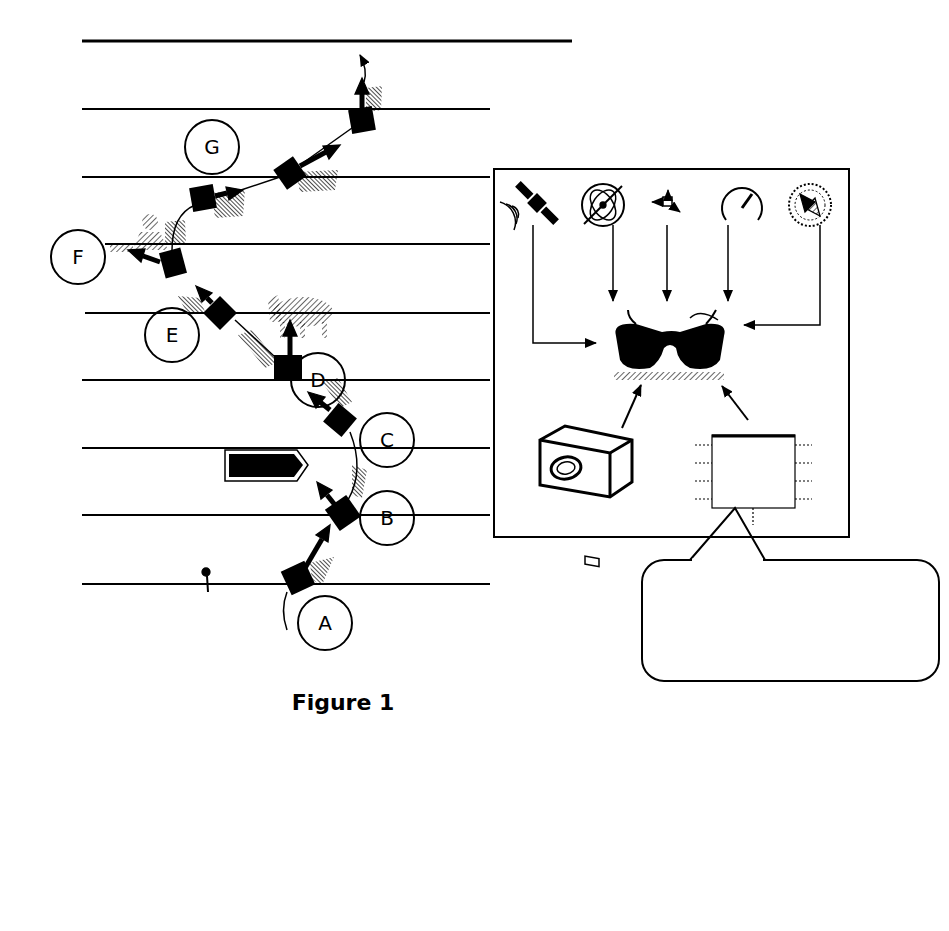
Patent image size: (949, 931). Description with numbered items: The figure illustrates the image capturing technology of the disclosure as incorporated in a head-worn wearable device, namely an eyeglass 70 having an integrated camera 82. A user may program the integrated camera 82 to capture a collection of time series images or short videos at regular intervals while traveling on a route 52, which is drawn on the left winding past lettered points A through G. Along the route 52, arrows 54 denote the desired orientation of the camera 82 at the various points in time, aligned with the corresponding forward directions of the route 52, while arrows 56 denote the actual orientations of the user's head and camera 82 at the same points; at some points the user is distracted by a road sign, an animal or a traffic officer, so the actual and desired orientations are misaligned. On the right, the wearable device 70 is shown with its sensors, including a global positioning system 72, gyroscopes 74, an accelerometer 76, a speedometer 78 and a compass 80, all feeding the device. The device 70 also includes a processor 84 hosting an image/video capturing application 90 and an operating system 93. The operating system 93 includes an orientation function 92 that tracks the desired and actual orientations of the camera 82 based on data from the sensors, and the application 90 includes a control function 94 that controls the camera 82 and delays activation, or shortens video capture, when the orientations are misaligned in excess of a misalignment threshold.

The route 52 is at (262, 166).
The arrows denoting desired orientation 54 is at (236, 214).
The arrows denoting actual orientation 56 is at (196, 178).
The eyeglass 70 is at (778, 379).
The global positioning system 72 is at (537, 175).
The gyroscopes 74 is at (607, 175).
The accelerometer 76 is at (675, 177).
The speedometer 78 is at (743, 175).
The compass 80 is at (808, 175).
The integrated camera 82 is at (567, 502).
The processor 84 is at (820, 463).
The image/video capturing application 90 is at (785, 583).
The orientation function 92 is at (789, 660).
The operating system 93 is at (703, 634).
The control function 94 is at (773, 609).